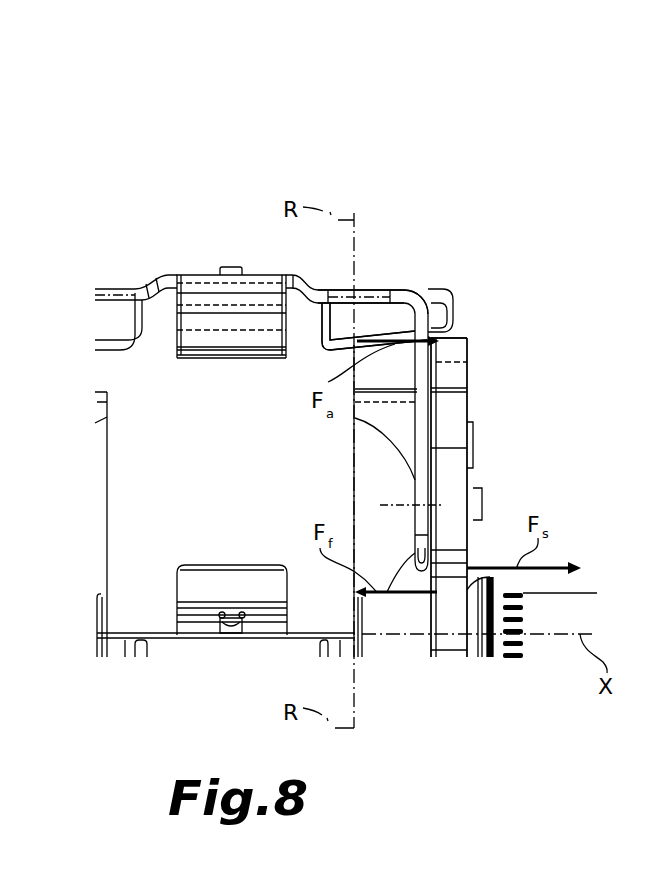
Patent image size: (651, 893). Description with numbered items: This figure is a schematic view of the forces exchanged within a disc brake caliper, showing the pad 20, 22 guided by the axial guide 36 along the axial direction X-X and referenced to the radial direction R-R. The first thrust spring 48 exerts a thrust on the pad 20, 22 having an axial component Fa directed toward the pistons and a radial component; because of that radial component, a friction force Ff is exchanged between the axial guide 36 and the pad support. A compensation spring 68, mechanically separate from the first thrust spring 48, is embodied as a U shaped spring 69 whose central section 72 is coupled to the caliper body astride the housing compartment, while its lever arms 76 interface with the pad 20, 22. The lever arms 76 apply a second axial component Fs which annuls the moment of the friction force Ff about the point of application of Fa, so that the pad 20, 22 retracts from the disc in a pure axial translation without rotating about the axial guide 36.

The pad 20 is at (467, 397).
The pad 22 is at (467, 397).
The axial guide 36 is at (397, 642).
The first thrust spring 48 is at (449, 292).
The compensation spring 68 is at (397, 286).
The U shaped spring 69 is at (397, 286).
The central section 72 is at (199, 272).
The lever arms 76 is at (422, 488).